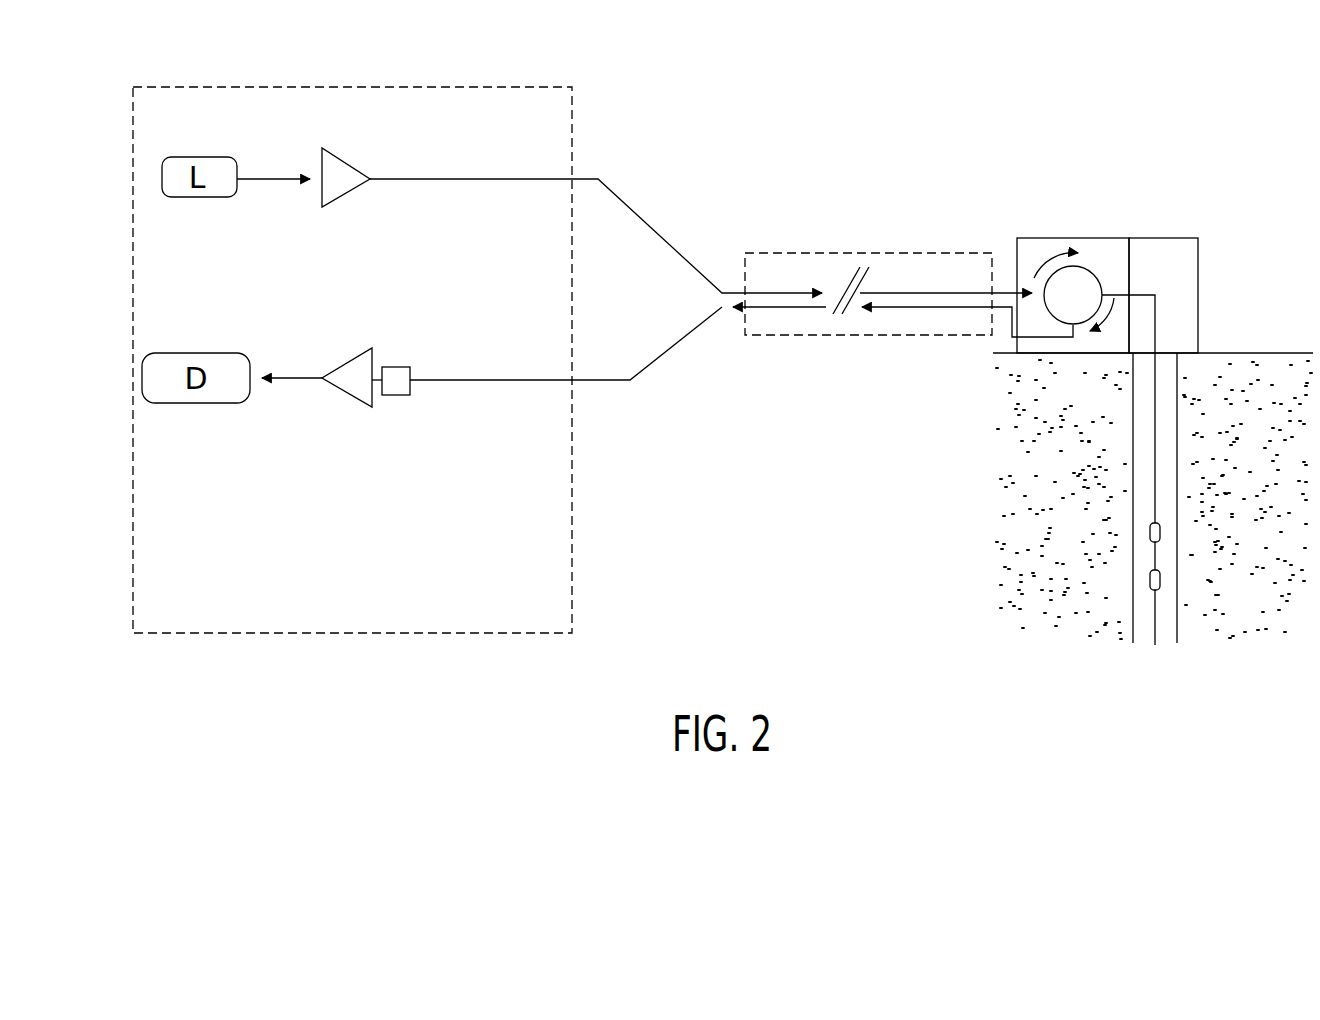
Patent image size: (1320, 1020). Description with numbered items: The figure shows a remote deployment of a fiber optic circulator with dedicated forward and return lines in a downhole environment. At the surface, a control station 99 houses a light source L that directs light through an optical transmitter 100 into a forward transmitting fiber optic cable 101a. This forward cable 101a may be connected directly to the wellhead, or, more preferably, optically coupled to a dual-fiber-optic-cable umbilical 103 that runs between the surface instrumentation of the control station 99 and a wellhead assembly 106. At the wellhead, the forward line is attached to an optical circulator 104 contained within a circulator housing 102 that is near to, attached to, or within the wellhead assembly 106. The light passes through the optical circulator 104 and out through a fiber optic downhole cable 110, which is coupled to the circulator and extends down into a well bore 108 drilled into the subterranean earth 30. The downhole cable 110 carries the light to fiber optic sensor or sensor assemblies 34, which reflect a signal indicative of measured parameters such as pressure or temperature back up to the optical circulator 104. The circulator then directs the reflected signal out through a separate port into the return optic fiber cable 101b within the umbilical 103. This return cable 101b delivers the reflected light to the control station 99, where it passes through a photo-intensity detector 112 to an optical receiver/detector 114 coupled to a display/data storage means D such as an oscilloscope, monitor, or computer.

The control station 99 is at (448, 87).
The optical transmitter 100 is at (345, 160).
The forward transmitting fiber optic cable 101a is at (650, 215).
The return optic fiber cable 101b is at (652, 365).
The circulator housing 102 is at (1030, 238).
The dual-fiber-optic-cable umbilical 103 is at (824, 250).
The optical circulator 104 is at (1070, 280).
The wellhead assembly 106 is at (1198, 280).
The subterranean earth 30 is at (1232, 365).
The well bore 108 is at (1130, 553).
The fiber optic downhole cable 110 is at (1153, 625).
The photo-intensity detector 112 is at (408, 396).
The optical receiver/detector 114 is at (345, 390).
The fiber optic sensor or sensor assemblies 34 is at (1158, 590).